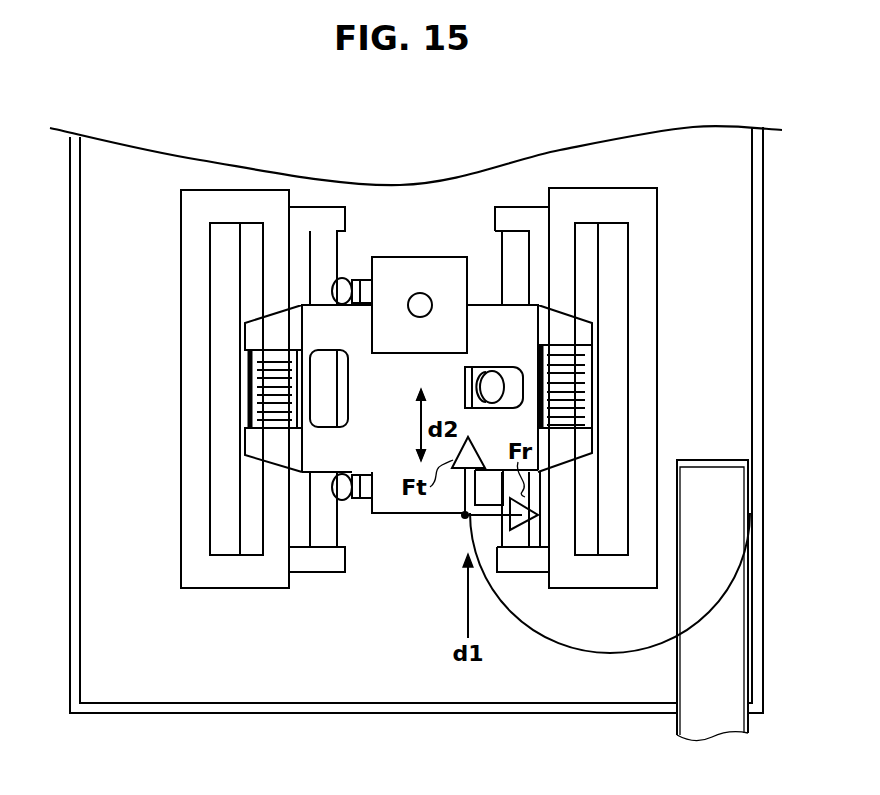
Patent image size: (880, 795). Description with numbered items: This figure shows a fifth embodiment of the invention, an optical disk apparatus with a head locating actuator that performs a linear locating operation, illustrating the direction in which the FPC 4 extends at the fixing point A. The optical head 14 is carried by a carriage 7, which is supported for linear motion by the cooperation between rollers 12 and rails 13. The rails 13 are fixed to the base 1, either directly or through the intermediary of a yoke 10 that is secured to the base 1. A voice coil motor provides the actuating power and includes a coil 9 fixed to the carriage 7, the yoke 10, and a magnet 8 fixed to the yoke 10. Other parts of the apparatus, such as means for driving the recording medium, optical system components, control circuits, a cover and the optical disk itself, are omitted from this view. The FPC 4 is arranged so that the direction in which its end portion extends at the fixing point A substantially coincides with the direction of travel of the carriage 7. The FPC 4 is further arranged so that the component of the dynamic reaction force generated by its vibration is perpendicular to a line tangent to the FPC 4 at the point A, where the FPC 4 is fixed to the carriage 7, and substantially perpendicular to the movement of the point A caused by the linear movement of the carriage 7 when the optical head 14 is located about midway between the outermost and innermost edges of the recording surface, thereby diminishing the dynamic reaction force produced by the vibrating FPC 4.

The base 1 is at (700, 165).
The FPC 4 is at (588, 655).
The carriage 7 is at (479, 299).
The magnet 8 is at (215, 495).
The coil 9 is at (575, 373).
The yoke 10 is at (199, 334).
The rollers 12 is at (345, 277).
The rails 13 is at (320, 240).
The optical head 14 is at (425, 292).
The fixing point A is at (465, 515).